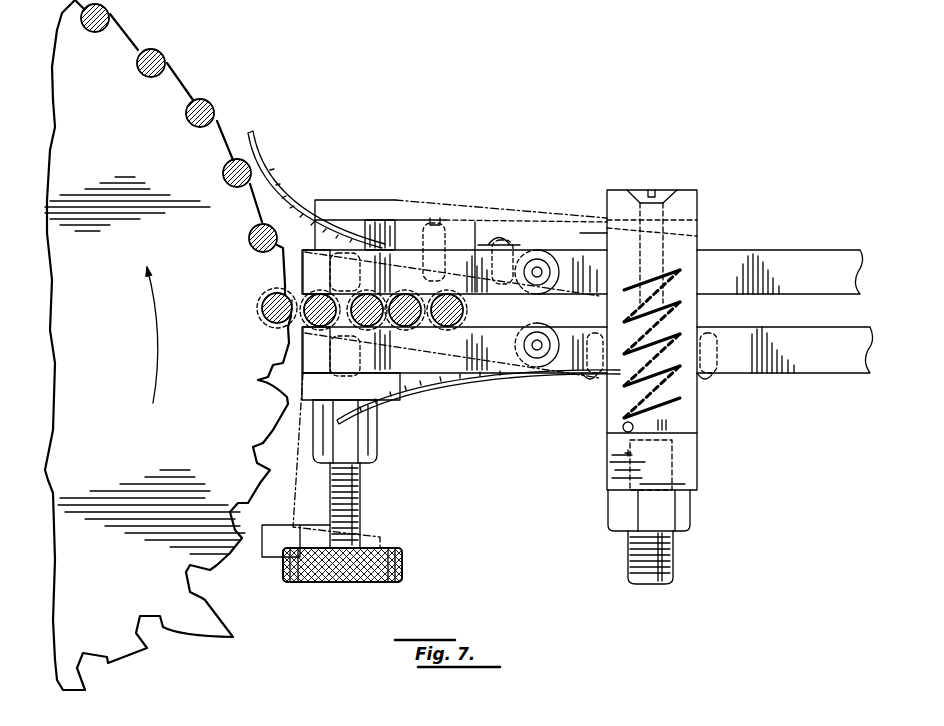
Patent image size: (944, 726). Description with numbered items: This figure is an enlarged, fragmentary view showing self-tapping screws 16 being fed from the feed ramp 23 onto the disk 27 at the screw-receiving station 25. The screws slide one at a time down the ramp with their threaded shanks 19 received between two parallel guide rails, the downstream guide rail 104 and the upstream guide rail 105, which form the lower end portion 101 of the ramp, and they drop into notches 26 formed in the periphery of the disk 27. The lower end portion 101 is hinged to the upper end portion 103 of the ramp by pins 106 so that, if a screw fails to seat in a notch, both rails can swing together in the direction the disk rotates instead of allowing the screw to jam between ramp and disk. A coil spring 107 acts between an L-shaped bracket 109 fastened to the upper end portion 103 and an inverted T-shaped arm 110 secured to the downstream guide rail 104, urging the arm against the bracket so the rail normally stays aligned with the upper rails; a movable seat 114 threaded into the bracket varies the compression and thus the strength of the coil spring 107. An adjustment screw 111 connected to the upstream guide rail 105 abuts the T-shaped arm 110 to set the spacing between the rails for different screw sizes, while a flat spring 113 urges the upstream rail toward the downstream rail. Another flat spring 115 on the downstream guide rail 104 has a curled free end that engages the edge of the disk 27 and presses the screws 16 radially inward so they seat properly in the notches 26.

The self-tapping screw 16 is at (207, 90).
The threaded shank 19 is at (223, 170).
The feed ramp 23 is at (780, 222).
The screw-receiving station 25 is at (293, 292).
The notches 26 is at (266, 392).
The disk 27 is at (230, 118).
The lower end portion 101 is at (500, 388).
The upper end portion 103 is at (817, 377).
The downstream guide rail 104 is at (400, 253).
The upstream guide rail 105 is at (390, 405).
The pins 106 is at (537, 268).
The coil spring 107 is at (663, 397).
The L-shaped bracket 109 is at (692, 460).
The T-shaped arm 110 is at (362, 218).
The adjustment screw 111 is at (360, 498).
The flat spring 113 is at (387, 410).
The movable seat 114 is at (675, 557).
The flat spring 115 is at (257, 157).